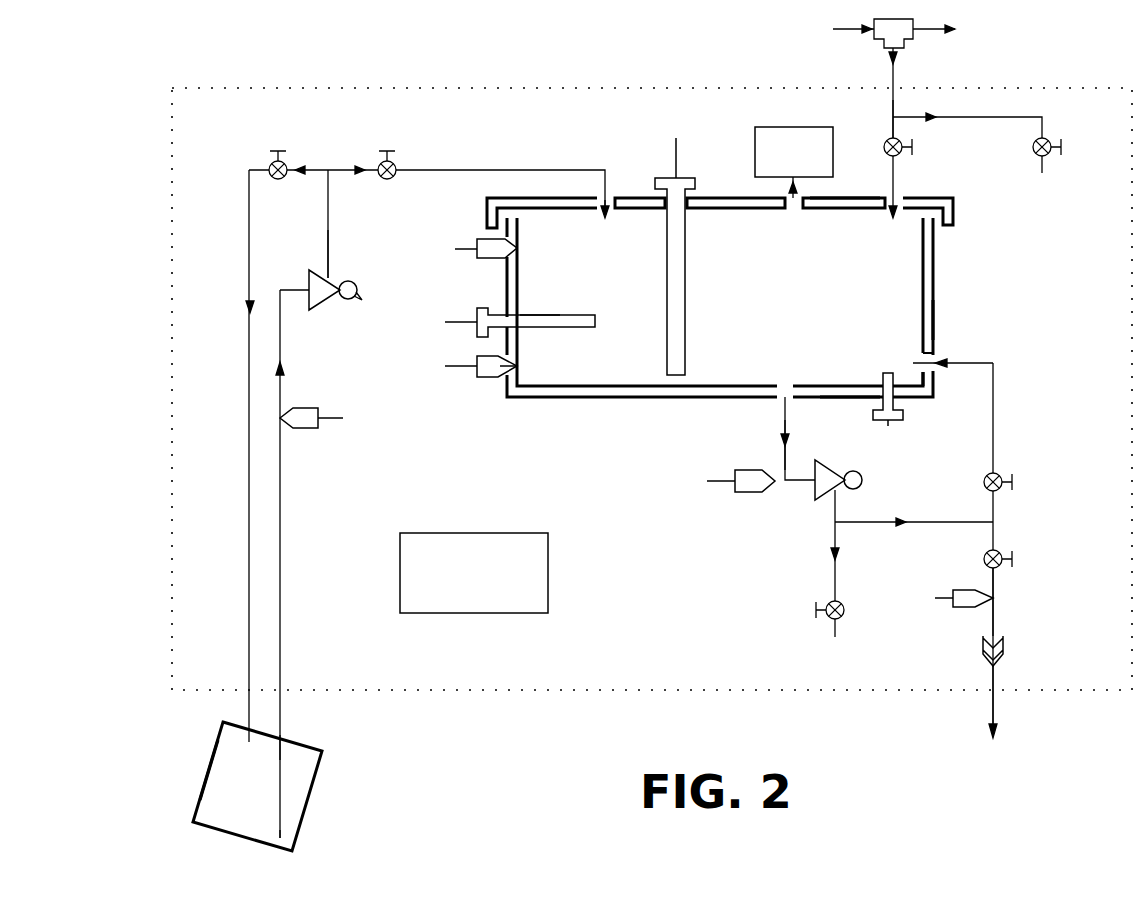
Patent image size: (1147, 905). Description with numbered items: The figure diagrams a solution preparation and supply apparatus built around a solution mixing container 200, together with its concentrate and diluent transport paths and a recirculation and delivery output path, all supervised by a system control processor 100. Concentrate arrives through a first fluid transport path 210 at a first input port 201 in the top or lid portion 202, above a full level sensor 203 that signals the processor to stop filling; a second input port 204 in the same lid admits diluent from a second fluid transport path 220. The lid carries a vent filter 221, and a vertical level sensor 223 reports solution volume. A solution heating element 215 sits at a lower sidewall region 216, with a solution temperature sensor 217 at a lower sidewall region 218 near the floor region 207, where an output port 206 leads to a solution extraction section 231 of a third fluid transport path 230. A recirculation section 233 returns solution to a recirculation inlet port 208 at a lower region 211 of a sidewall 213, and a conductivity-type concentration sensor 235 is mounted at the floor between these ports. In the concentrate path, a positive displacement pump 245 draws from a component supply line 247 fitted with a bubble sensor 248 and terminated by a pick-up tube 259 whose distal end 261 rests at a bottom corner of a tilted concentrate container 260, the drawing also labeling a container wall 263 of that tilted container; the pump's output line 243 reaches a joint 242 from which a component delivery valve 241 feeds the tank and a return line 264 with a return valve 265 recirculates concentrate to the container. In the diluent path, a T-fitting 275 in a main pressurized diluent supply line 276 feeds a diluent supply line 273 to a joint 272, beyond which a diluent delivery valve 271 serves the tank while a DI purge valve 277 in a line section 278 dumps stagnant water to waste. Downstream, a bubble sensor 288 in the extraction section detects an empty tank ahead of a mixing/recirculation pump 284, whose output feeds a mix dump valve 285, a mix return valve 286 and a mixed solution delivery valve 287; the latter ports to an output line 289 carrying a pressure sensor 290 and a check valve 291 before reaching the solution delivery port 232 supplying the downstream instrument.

The system control processor 100 is at (448, 533).
The solution mixing container 200 is at (935, 253).
The first input port 201 is at (603, 200).
The top or lid portion 202 is at (505, 200).
The full level sensor 203 is at (448, 244).
The second input port 204 is at (882, 197).
The output port 206 is at (783, 386).
The floor region 207 is at (855, 375).
The recirculation inlet port 208 is at (925, 362).
The first fluid transport path 210 is at (462, 169).
The lower region of sidewall 211 is at (935, 375).
The sidewall 213 is at (935, 325).
The solution heating element 215 is at (482, 308).
The lower sidewall region 216 is at (527, 317).
The solution temperature sensor 217 is at (474, 361).
The lower sidewall region 218 is at (510, 371).
The second fluid transport path 220 is at (896, 178).
The vent filter 221 is at (800, 128).
The vertical level sensor 223 is at (657, 182).
The third fluid transport path 230 is at (996, 418).
The solution extraction section 231 is at (783, 430).
The solution delivery port 232 is at (990, 710).
The recirculation section 233 is at (995, 363).
The concentration sensor 235 is at (875, 418).
The component delivery valve 241 is at (371, 179).
The joint 242 is at (328, 170).
The output line 243 is at (328, 248).
The positive displacement pump 245 is at (354, 304).
The component supply line 247 is at (283, 470).
The bubble sensor 248 is at (305, 405).
The pick-up tube 259 is at (283, 732).
The concentrate container 260 is at (305, 808).
The distal end of pick-up tube 261 is at (280, 838).
The container wall 263 is at (213, 800).
The return line 264 is at (249, 507).
The return valve 265 is at (262, 179).
The diluent delivery valve 271 is at (900, 152).
The joint 272 is at (893, 117).
The diluent supply line 273 is at (893, 76).
The T-fitting 275 is at (918, 26).
The main pressurized diluent supply line 276 is at (870, 26).
The DI purge valve 277 is at (1050, 152).
The line section 278 is at (1003, 117).
The mixing/recirculation pump 284 is at (875, 472).
The mix dump valve 285 is at (828, 603).
The mix return valve 286 is at (984, 482).
The mixed solution delivery valve 287 is at (984, 559).
The bubble sensor 288 is at (735, 479).
The output line 289 is at (997, 618).
The pressure sensor 290 is at (966, 610).
The check valve 291 is at (1005, 661).